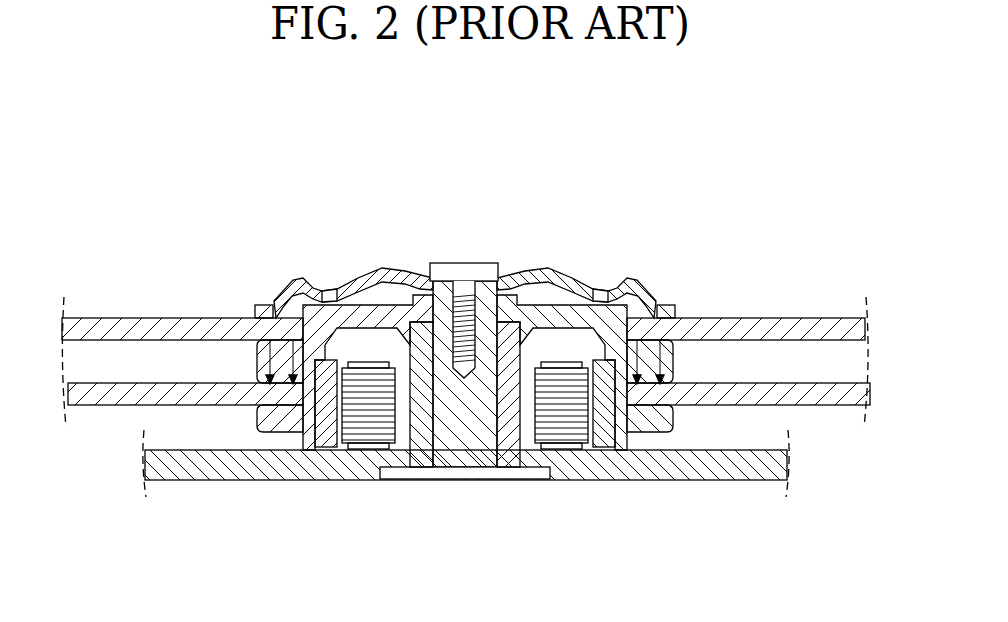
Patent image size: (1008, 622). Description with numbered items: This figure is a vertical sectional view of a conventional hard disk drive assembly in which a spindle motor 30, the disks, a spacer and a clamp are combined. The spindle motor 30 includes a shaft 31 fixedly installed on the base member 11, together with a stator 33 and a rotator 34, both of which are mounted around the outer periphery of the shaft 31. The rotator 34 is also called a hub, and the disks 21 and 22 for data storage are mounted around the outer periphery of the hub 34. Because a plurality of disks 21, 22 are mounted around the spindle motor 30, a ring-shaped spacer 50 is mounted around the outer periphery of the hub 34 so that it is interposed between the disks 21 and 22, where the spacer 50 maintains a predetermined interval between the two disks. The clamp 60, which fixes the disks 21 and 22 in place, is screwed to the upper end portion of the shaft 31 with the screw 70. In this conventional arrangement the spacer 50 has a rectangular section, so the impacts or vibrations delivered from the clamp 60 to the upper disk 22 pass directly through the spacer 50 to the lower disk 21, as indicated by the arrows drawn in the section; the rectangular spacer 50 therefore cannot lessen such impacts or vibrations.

The base member 11 is at (727, 468).
The disk 21 is at (832, 395).
The disk 22 is at (809, 330).
The spindle motor 30 is at (447, 400).
The shaft 31 is at (458, 440).
The stator 33 is at (558, 417).
The rotator 34 is at (648, 430).
The spacer 50 is at (272, 310).
The clamp 60 is at (575, 280).
The screw 70 is at (466, 272).